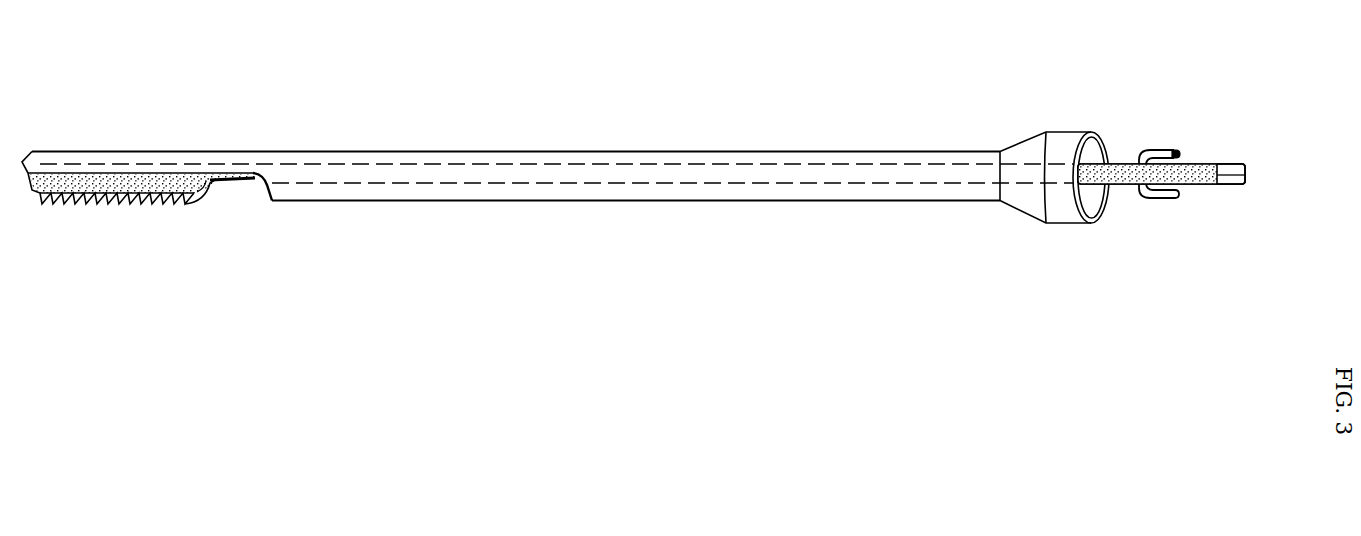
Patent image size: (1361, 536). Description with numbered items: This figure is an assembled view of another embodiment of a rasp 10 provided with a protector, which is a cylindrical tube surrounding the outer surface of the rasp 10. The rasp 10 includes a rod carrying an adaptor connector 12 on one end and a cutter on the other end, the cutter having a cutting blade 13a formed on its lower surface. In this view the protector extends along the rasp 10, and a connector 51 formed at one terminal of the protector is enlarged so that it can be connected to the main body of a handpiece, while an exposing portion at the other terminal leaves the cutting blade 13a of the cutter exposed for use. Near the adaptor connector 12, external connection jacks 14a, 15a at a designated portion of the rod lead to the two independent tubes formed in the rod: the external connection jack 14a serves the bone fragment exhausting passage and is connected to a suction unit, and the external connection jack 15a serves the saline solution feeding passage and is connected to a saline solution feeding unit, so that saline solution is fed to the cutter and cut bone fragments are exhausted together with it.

The rasp 10 is at (1128, 157).
The adaptor connector 12 is at (1230, 187).
The cutting blade 13a is at (153, 210).
The external connection jack 14a is at (1182, 152).
The external connection jack 15a is at (1162, 200).
The connector 51 is at (1072, 130).